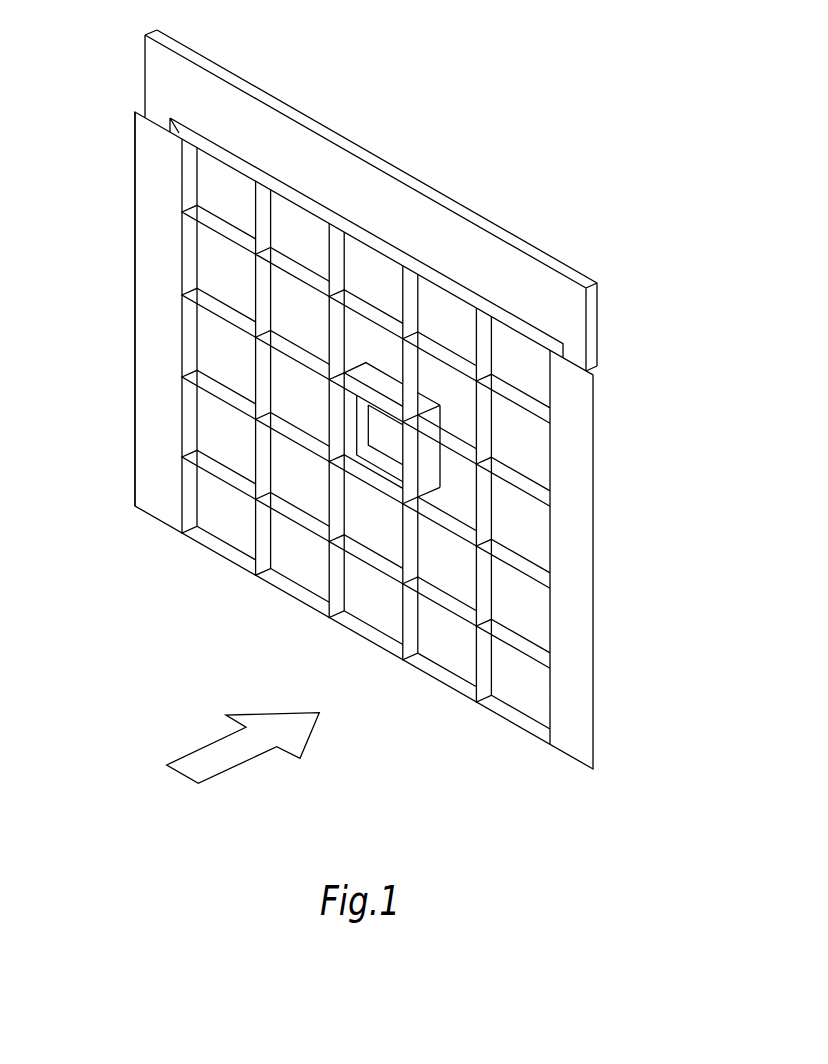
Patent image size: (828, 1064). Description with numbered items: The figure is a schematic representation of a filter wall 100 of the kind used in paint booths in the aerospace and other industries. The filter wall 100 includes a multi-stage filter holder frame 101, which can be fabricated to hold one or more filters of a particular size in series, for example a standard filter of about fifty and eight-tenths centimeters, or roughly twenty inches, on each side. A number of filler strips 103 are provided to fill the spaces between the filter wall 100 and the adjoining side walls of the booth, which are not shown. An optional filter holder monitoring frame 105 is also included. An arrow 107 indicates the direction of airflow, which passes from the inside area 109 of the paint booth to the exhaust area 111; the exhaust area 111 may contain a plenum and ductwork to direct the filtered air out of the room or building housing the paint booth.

The filter wall 100 is at (375, 398).
The multi-stage filter holder frame 101 is at (225, 189).
The filler strips 103 is at (577, 304).
The filter holder monitoring frame 105 is at (392, 383).
The arrow 107 is at (208, 757).
The inside area 109 is at (73, 612).
The exhaust area 111 is at (438, 48).